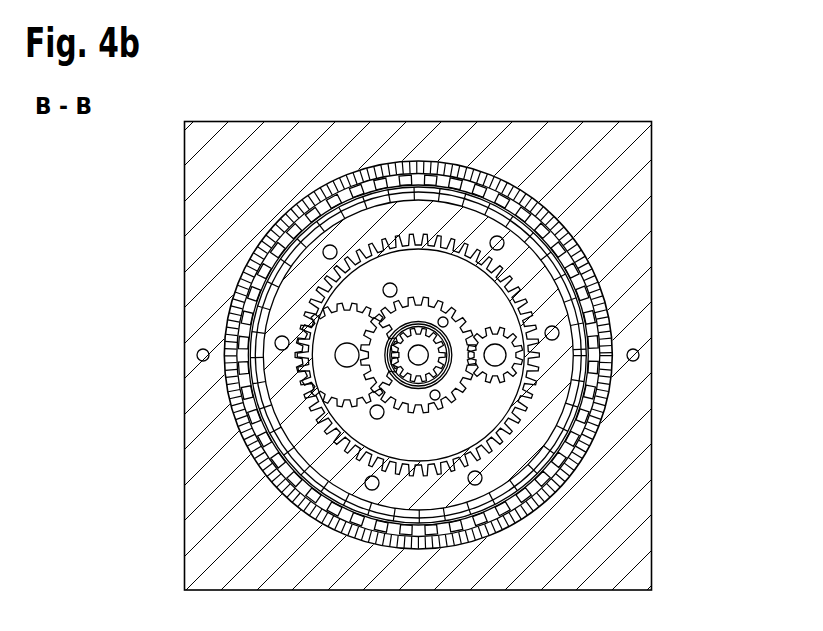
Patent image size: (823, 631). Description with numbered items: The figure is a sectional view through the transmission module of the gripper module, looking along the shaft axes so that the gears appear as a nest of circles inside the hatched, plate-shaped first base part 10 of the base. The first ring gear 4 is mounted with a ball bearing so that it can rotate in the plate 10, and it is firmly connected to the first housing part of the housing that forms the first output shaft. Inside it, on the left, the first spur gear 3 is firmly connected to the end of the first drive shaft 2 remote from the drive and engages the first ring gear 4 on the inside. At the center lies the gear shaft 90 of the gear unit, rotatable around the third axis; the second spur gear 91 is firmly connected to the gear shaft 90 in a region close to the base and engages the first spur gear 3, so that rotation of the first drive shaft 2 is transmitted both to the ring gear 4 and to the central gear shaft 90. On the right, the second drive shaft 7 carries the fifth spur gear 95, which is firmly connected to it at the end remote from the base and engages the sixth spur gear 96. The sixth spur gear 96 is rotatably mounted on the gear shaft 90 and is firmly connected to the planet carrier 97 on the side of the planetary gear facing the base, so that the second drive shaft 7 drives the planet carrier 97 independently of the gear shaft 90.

The first base part 10 is at (620, 170).
The first ring gear 4 is at (525, 270).
The first drive shaft 2 is at (347, 355).
The first spur gear 3 is at (322, 340).
The second drive shaft 7 is at (495, 355).
The gear shaft 90 is at (418, 355).
The second spur gear 91 is at (395, 337).
The fifth spur gear 95 is at (500, 373).
The sixth spur gear 96 is at (453, 397).
The planet carrier 97 is at (370, 435).